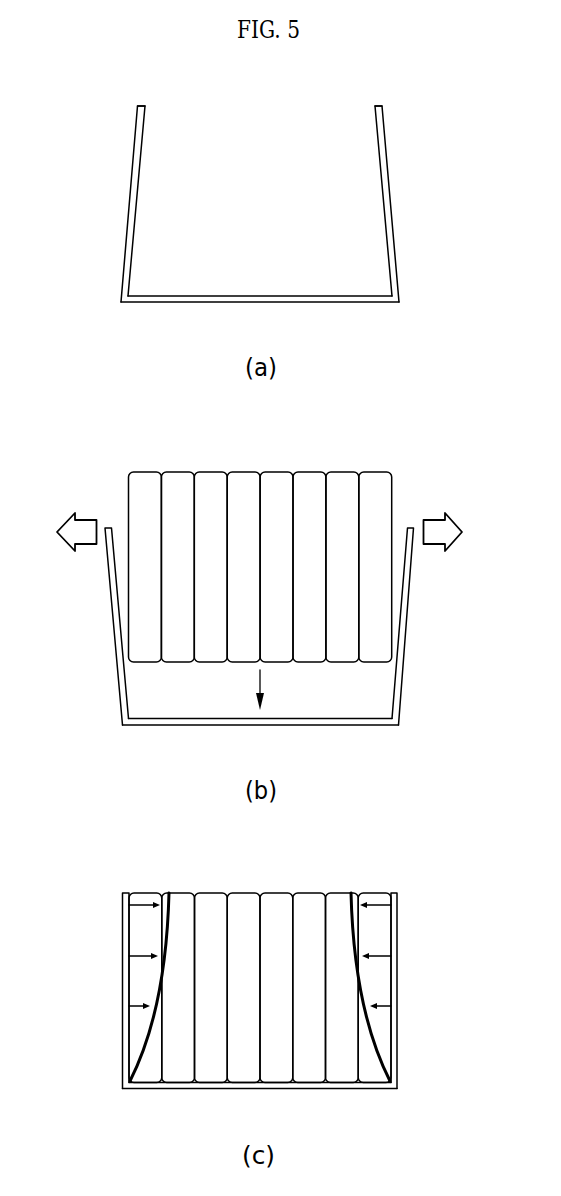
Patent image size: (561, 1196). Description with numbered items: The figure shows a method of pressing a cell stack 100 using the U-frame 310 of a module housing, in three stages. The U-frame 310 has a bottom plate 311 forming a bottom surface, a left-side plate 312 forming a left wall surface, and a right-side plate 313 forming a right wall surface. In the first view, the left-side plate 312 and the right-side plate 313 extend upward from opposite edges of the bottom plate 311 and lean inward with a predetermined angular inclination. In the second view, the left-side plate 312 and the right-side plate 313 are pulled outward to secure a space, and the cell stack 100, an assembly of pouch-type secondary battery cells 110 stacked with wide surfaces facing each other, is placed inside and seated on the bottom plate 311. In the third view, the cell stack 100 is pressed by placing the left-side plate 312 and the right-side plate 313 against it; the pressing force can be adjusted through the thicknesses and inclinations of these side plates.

The U-frame 310 is at (413, 139).
The bottom plate 311 is at (272, 302).
The left-side plate 312 is at (128, 200).
The right-side plate 313 is at (390, 201).
The cell stack 100 is at (292, 455).
The pouch-type secondary battery cell 110 is at (178, 478).